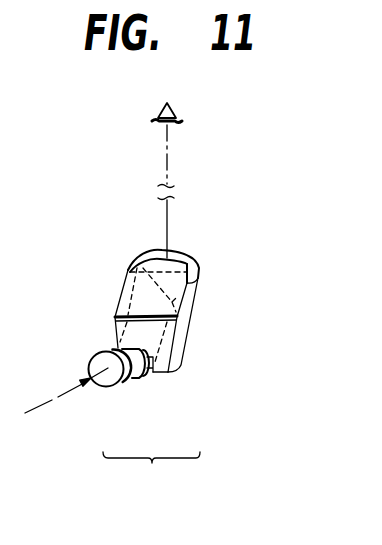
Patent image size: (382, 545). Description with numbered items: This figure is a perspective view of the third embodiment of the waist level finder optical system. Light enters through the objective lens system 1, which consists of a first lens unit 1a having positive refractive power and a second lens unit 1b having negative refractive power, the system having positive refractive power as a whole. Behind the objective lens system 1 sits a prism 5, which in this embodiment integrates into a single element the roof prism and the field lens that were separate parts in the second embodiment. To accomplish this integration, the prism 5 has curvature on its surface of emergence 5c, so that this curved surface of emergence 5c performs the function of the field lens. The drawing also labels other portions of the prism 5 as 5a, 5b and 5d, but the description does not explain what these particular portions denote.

The objective lens system 1 is at (151, 477).
The first lens unit 1a is at (110, 386).
The second lens unit 1b is at (147, 380).
The prism 5 is at (121, 278).
The bottom end of body 5a is at (172, 373).
The internal bore (hidden) 5b is at (148, 302).
The surface of emergence 5c is at (188, 251).
The side face 5d is at (184, 333).